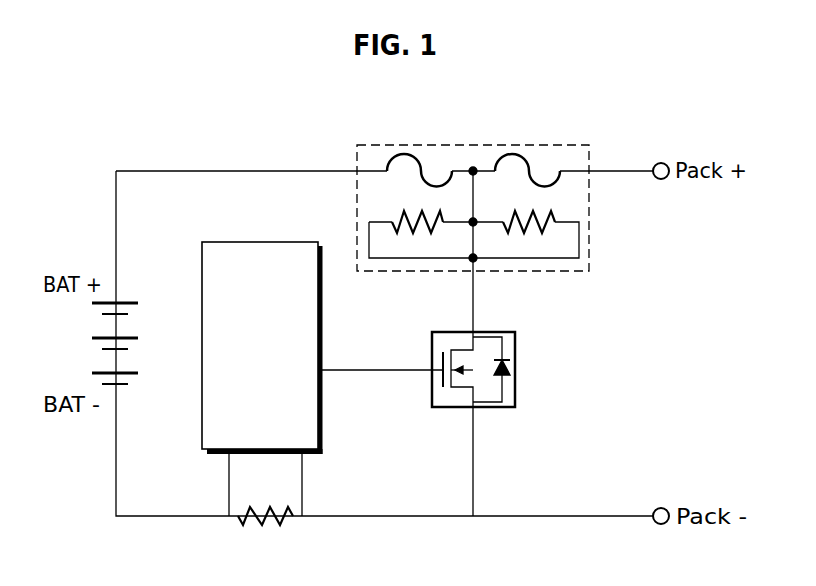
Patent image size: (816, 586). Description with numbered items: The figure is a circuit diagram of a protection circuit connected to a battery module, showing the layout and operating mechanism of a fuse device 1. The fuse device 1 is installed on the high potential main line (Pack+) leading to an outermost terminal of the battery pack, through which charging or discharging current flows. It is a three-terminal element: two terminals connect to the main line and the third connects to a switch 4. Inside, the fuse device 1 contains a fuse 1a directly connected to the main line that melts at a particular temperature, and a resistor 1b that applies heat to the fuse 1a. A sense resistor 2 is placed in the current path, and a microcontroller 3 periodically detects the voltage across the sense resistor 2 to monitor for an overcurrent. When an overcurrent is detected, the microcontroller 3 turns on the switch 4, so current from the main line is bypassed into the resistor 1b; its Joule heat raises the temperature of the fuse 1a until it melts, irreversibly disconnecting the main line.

The fuse device 1 is at (473, 205).
The fuse 1a is at (403, 153).
The resistor 1b is at (413, 232).
The sense resistor 2 is at (262, 527).
The microcontroller 3 is at (261, 242).
The switch 4 is at (515, 370).